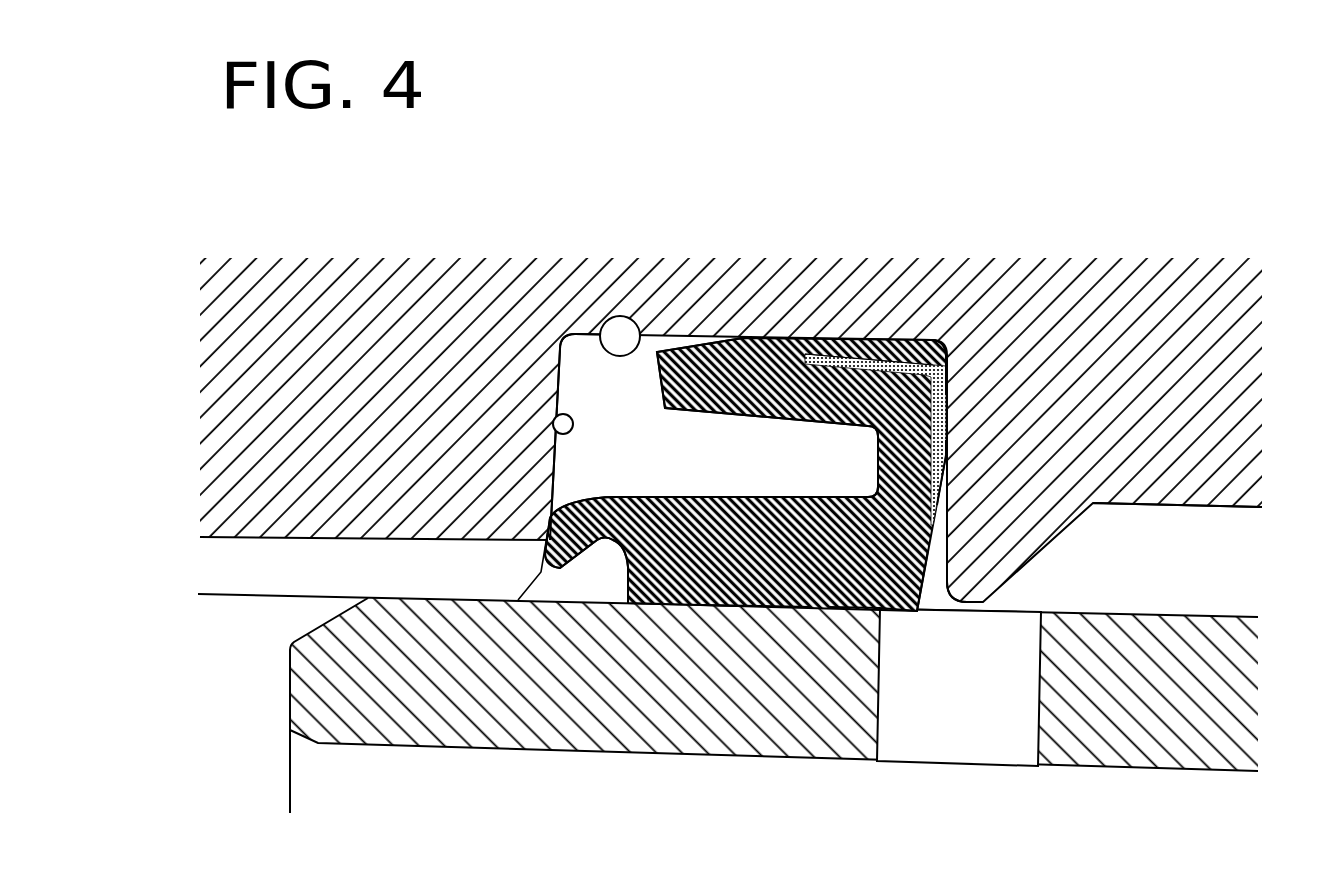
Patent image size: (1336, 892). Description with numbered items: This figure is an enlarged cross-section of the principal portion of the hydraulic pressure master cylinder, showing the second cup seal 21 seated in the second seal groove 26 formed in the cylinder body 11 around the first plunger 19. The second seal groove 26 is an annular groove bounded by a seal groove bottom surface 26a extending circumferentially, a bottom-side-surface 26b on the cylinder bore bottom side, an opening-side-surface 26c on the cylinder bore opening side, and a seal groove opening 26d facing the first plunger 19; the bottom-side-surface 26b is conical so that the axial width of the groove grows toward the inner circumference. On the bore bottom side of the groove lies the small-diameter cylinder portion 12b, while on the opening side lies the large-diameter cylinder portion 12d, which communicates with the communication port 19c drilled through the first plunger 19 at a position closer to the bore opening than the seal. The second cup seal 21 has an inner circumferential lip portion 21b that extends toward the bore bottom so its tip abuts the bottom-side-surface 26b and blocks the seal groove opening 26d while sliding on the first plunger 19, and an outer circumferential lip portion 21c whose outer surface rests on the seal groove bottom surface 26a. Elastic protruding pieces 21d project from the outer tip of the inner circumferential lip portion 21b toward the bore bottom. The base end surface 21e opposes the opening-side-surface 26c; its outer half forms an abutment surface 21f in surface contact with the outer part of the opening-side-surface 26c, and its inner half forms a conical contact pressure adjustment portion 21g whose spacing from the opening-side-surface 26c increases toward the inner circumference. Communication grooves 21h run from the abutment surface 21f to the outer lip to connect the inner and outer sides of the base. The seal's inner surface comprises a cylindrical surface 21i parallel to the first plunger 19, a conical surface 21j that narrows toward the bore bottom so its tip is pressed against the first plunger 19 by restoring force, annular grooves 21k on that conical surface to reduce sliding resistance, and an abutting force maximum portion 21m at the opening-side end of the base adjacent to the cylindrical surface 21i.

The cylinder body 11 is at (218, 432).
The small-diameter cylinder portion 12b is at (245, 596).
The large-diameter cylinder portion 12d is at (1162, 506).
The first plunger 19 is at (312, 680).
The communication port 19c is at (944, 746).
The second cup seal 21 is at (828, 332).
The inner circumferential lip portion 21b is at (742, 492).
The outer circumferential lip portion 21c is at (722, 410).
The elastic protruding piece 21d is at (545, 533).
The base end surface 21e is at (954, 433).
The abutment surface 21f is at (950, 393).
The contact pressure adjustment portion 21g is at (950, 483).
The communication groove 21h is at (806, 352).
The cylindrical surface 21i is at (857, 608).
The conical surface 21j is at (726, 608).
The annular groove 21k is at (800, 608).
The abutting force maximum portion 21m is at (918, 610).
The second seal groove 26 is at (572, 380).
The seal groove bottom surface 26a is at (633, 340).
The bottom-side-surface 26b is at (552, 427).
The opening-side-surface 26c is at (962, 527).
The seal groove opening 26d is at (531, 586).